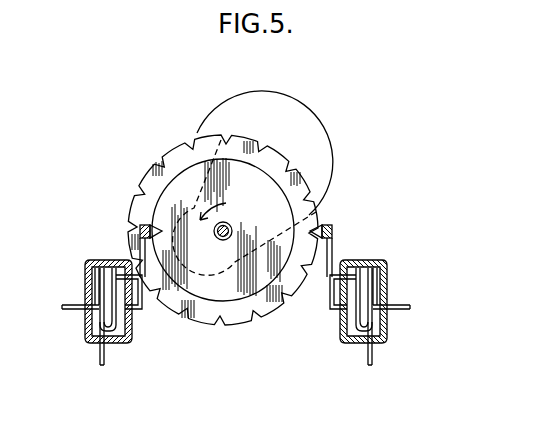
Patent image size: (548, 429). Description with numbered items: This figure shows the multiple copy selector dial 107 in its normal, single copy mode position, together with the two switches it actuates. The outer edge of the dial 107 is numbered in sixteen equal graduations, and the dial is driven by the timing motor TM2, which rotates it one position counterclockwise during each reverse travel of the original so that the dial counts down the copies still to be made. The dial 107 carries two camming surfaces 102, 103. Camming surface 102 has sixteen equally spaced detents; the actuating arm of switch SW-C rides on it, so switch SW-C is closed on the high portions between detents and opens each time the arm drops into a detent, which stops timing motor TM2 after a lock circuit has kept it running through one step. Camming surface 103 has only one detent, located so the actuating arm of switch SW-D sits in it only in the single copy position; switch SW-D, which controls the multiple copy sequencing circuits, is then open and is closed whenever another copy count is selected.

The multiple copy selector dial 107 is at (144, 170).
The timing motor TM2 is at (327, 152).
The camming surface 102 is at (317, 214).
The camming surface 103 is at (214, 290).
The switch SW-C is at (373, 258).
The switch SW-D is at (86, 340).